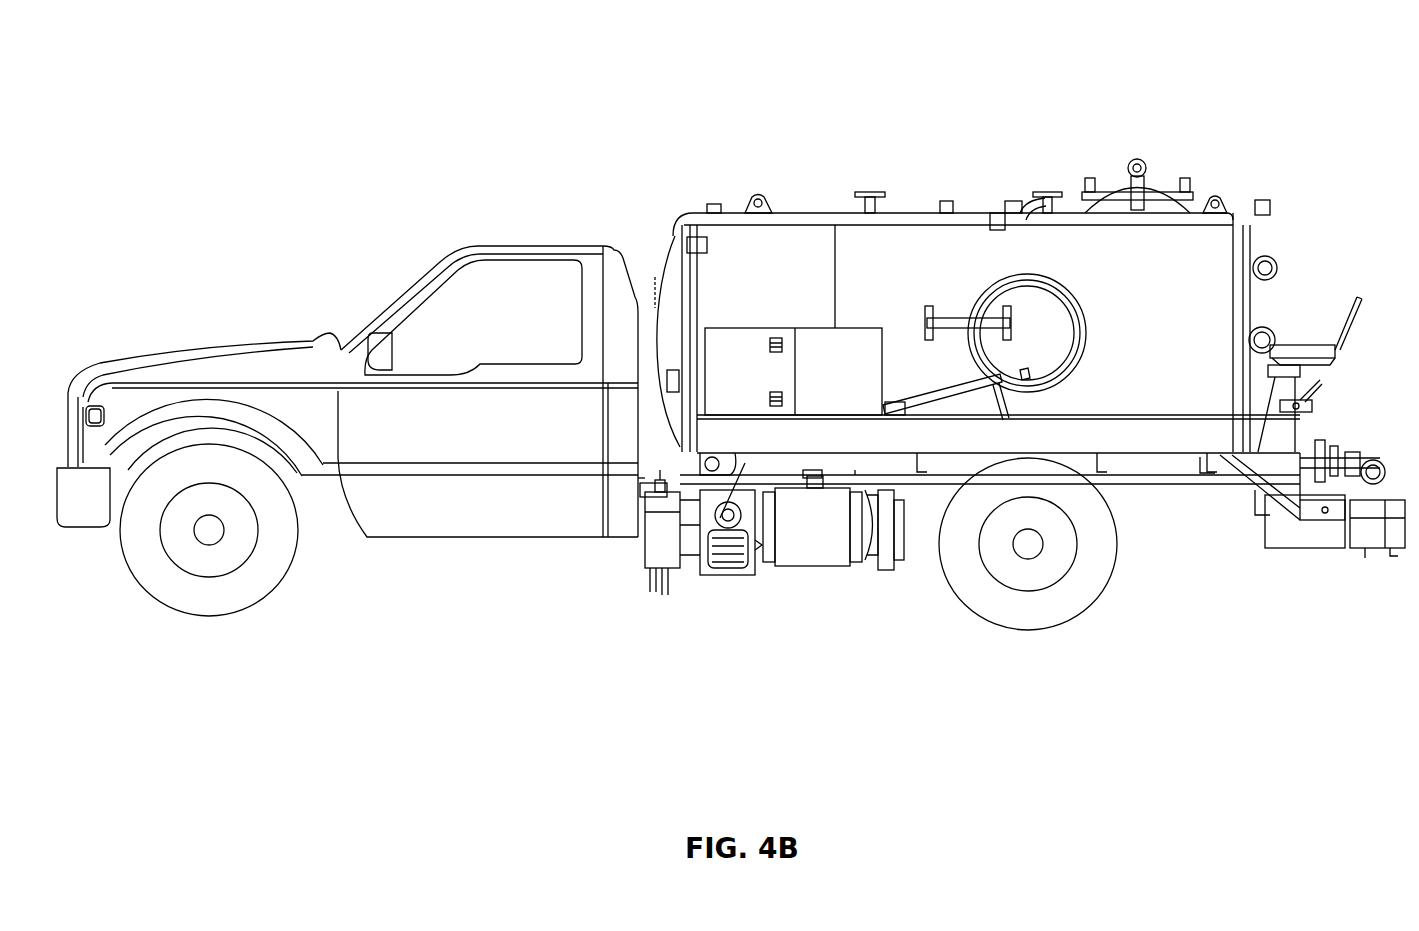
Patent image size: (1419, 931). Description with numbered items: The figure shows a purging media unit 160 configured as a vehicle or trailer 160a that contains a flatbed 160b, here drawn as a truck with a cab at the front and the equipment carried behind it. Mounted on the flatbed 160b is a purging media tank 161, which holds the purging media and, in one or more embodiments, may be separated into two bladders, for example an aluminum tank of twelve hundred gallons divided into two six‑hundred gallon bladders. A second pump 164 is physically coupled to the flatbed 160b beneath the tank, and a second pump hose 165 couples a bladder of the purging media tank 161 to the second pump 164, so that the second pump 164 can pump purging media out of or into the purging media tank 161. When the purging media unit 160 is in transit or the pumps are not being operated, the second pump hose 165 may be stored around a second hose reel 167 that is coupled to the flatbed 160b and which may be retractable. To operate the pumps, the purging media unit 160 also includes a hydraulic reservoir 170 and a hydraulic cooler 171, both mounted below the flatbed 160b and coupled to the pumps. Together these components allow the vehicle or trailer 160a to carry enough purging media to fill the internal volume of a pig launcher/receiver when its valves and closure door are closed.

The purging media unit 160 is at (203, 90).
The purging media tank 161 is at (1167, 287).
The second pump hose 165 is at (935, 388).
The second hose reel 167 is at (963, 312).
The second pump 164 is at (727, 577).
The hydraulic reservoir 170 is at (840, 568).
The hydraulic cooler 171 is at (895, 568).
The vehicle or trailer 160a is at (1263, 428).
The flatbed 160b is at (727, 512).